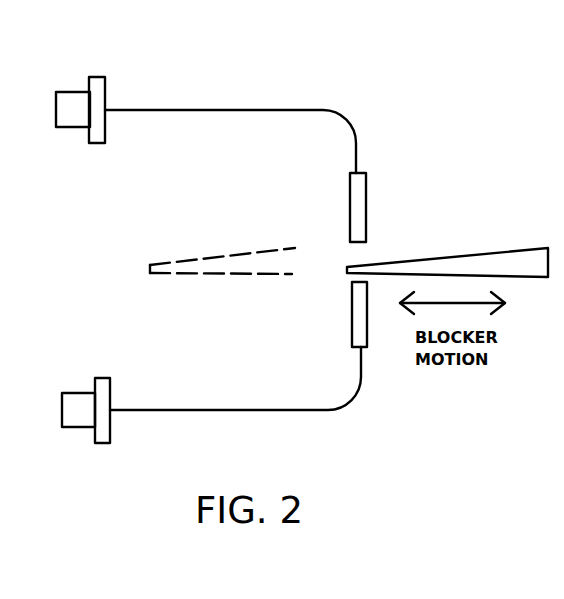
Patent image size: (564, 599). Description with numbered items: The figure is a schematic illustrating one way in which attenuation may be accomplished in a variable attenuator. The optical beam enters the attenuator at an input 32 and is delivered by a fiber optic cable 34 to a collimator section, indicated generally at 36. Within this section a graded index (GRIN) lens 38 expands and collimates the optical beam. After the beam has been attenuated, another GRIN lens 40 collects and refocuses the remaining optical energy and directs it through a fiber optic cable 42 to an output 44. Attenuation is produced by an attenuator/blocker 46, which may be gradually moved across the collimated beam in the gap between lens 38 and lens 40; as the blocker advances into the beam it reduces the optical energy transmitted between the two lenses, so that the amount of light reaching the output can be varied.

The input 32 is at (70, 427).
The fiber optic cable 34 is at (297, 410).
The collimator section 36 is at (368, 255).
The graded index (GRIN) lens 38 is at (355, 325).
The GRIN lens 40 is at (348, 200).
The fiber optic cable 42 is at (269, 110).
The output 44 is at (64, 92).
The attenuator/blocker 46 is at (485, 255).